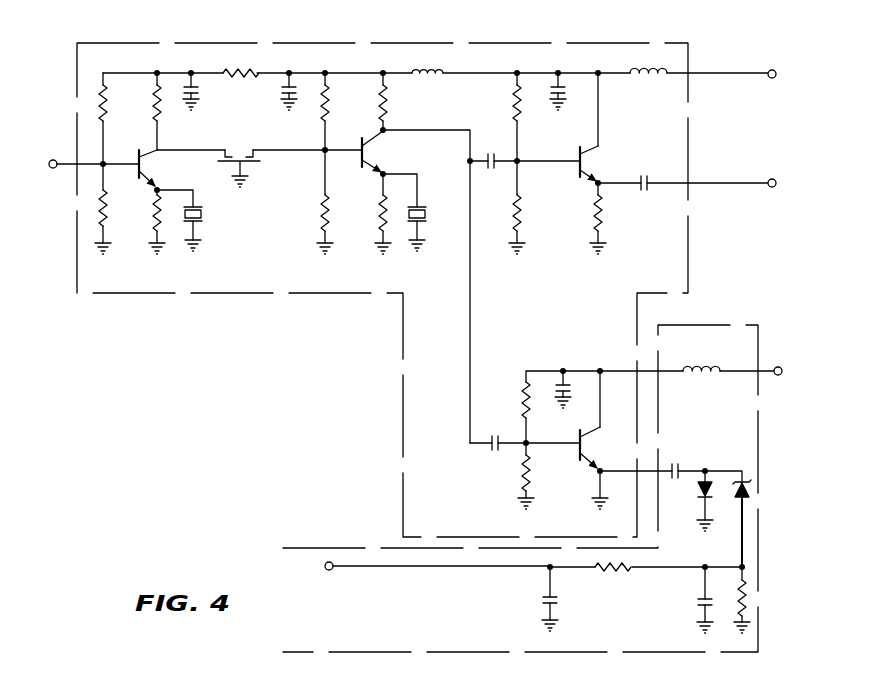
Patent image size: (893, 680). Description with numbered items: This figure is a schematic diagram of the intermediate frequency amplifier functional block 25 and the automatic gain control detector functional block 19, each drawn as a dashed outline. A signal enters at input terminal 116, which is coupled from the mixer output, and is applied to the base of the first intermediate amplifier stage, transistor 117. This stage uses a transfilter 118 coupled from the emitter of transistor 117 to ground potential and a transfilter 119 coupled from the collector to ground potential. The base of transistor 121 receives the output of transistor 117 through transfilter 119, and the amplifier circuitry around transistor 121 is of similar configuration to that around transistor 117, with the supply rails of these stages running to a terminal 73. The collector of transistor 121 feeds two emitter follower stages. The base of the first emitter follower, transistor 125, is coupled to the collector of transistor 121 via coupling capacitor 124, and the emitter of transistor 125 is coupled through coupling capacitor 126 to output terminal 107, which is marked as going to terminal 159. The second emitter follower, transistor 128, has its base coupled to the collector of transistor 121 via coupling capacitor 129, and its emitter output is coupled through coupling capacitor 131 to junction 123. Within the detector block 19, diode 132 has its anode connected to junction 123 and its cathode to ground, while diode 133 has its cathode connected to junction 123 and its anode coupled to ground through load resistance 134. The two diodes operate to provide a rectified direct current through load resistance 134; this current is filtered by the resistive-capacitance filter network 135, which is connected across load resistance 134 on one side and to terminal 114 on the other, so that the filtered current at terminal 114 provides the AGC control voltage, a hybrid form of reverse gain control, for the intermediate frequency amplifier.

The intermediate frequency amplifier functional block 25 is at (437, 44).
The terminal 73 is at (771, 70).
The signal input terminal 116 is at (53, 159).
The transistor 117 is at (131, 148).
The transfilter 118 is at (203, 218).
The transfilter 119 is at (244, 145).
The transistor 121 is at (371, 134).
The coupling capacitor 124 is at (494, 169).
The transistor 125 is at (588, 140).
The coupling capacitor 126 is at (651, 177).
The output terminal 107 is at (742, 189).
The terminal 159 is at (799, 217).
The transistor 128 is at (576, 437).
The coupling capacitor 129 is at (491, 444).
The coupling capacitor 131 is at (682, 463).
The junction 123 is at (708, 468).
The diode 132 is at (699, 490).
The diode 133 is at (749, 480).
The load resistance 134 is at (752, 600).
The filter network 135 is at (624, 577).
The automatic gain control detector functional block 19 is at (336, 546).
The terminal 114 is at (421, 570).